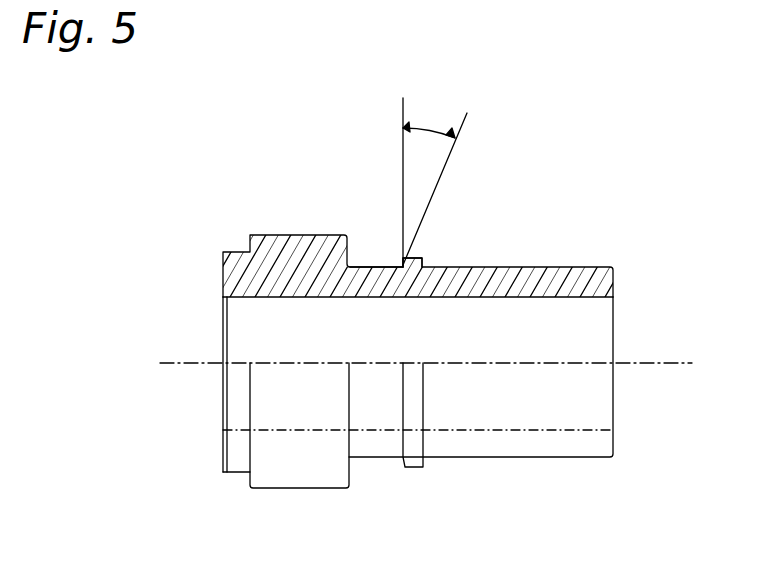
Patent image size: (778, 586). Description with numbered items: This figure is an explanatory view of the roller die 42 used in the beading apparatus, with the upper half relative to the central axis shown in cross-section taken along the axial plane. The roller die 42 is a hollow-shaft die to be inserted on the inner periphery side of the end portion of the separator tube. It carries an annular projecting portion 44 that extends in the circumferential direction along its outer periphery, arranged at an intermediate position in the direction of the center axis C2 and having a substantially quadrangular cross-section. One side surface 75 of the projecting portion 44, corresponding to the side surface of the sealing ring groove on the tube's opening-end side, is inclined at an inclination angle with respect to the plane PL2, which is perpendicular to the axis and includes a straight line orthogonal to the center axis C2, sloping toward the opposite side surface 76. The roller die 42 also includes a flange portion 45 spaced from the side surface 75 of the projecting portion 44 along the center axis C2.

The roller die 42 is at (613, 185).
The projecting portion 44 is at (423, 467).
The flange portion 45 is at (300, 470).
The side surface 75 is at (398, 262).
The side surface 76 is at (425, 262).
The plane PL2 is at (402, 158).
The center axis C2 is at (652, 362).